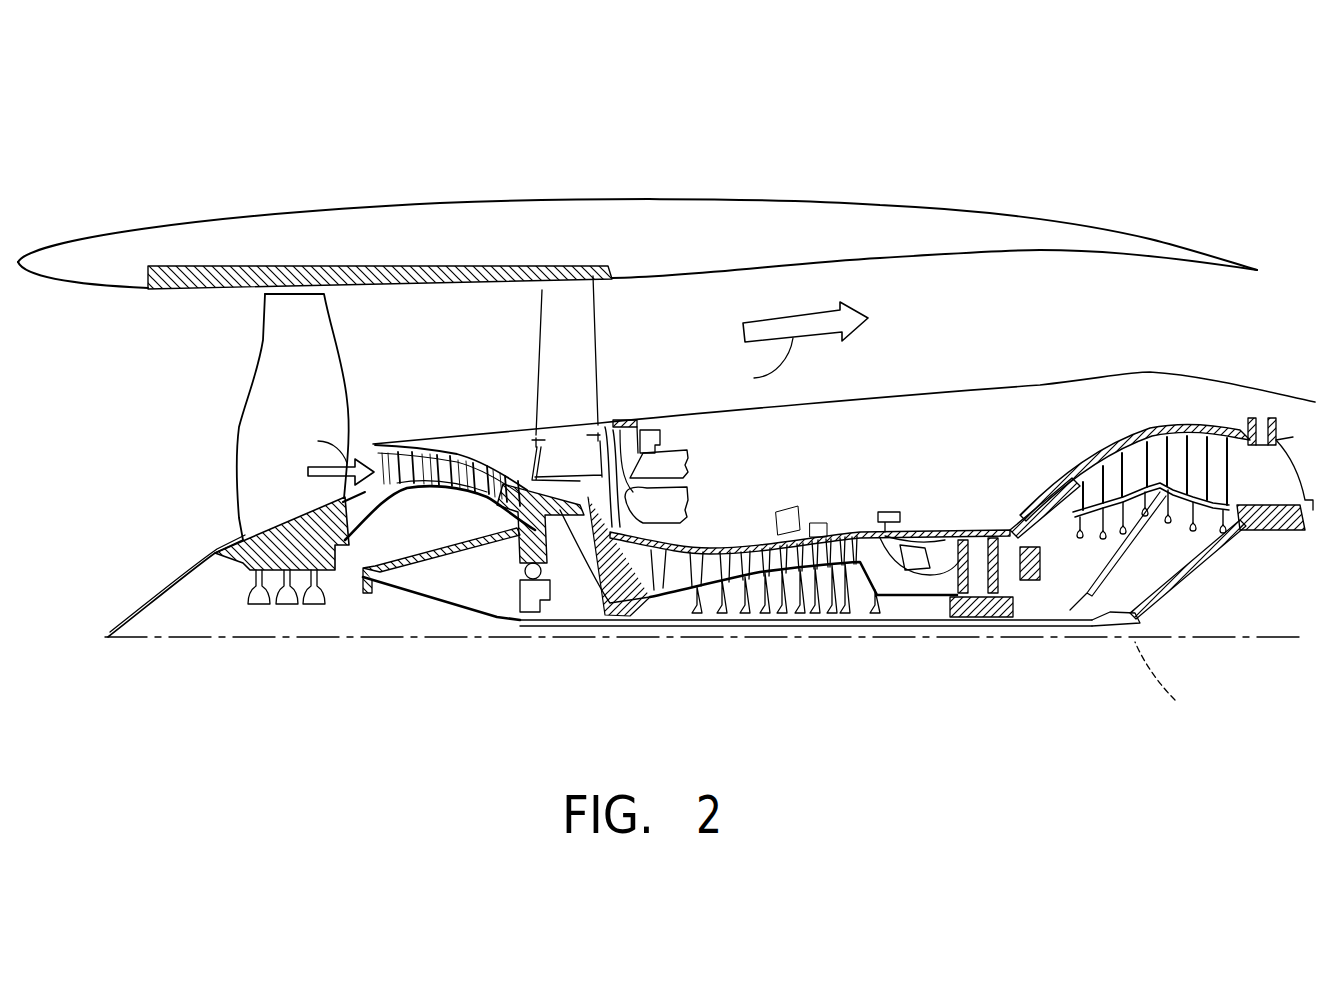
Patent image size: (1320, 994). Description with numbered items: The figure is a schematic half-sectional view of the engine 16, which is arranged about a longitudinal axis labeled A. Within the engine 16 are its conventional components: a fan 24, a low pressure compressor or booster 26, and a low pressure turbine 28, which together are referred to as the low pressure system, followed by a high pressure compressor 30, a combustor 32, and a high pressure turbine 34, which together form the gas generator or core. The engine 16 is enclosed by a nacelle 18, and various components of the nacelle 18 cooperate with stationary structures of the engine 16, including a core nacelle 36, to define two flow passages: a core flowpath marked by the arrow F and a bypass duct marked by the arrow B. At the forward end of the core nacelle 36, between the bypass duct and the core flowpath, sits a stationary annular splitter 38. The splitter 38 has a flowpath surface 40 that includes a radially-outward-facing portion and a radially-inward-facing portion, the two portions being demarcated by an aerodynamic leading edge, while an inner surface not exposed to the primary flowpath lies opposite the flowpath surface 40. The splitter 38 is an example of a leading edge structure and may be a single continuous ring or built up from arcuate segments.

The engine 16 is at (1132, 186).
The nacelle 18 is at (480, 200).
The fan 24 is at (252, 460).
The low pressure compressor or booster 26 is at (386, 520).
The low pressure turbine 28 is at (1100, 445).
The high pressure compressor 30 is at (738, 522).
The combustor 32 is at (915, 568).
The high pressure turbine 34 is at (985, 600).
The core nacelle 36 is at (1060, 382).
The stationary annular splitter 38 is at (380, 442).
The flowpath surface 40 is at (401, 436).